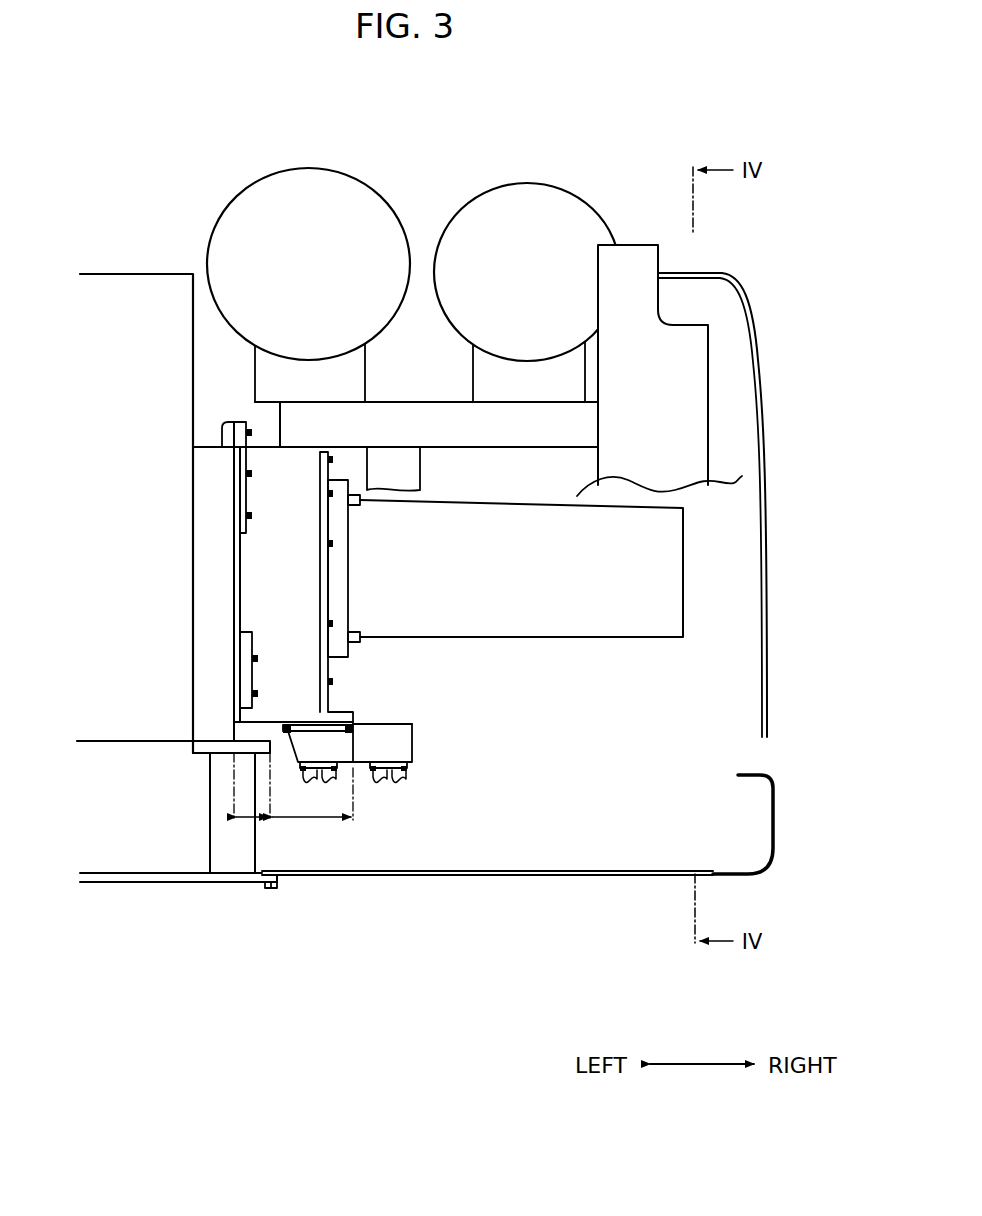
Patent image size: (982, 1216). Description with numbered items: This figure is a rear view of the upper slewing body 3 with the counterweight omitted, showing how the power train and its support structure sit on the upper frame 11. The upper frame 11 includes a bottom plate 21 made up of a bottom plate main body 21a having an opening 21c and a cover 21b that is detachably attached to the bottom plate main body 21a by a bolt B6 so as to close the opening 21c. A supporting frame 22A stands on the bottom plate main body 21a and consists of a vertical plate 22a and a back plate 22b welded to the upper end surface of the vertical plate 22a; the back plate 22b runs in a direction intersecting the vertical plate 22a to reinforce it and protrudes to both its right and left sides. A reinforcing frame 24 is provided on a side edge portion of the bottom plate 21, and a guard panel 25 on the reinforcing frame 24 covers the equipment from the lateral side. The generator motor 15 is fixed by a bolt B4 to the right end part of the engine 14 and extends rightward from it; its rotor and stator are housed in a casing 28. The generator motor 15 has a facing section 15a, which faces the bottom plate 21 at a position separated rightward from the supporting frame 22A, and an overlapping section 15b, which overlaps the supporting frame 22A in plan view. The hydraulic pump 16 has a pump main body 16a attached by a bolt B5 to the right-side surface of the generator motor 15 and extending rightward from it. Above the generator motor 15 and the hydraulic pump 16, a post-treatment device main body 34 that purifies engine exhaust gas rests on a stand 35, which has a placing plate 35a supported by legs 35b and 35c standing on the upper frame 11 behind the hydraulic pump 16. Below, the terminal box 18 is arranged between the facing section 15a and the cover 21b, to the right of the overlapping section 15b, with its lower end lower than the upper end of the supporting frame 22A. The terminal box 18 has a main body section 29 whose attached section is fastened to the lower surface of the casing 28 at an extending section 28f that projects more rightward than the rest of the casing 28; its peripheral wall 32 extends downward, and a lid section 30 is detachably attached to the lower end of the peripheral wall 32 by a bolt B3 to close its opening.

The upper slewing body 3 is at (648, 116).
The engine 14 is at (108, 274).
The post-treatment device main body 34 is at (425, 197).
The stand 35 is at (703, 370).
The placing plate 35a is at (409, 413).
The leg 35b is at (672, 438).
The leg 35c is at (412, 479).
The bolt B4 is at (253, 433).
The bolt B5 is at (360, 503).
The generator motor 15 is at (260, 585).
The casing 28 is at (221, 581).
The hydraulic pump 16 is at (577, 627).
The pump main body 16a is at (521, 594).
The terminal box 18 is at (396, 708).
The extending section 28f is at (337, 719).
The main body section 29 is at (403, 743).
The peripheral wall 32 is at (400, 733).
The guard panel 25 is at (771, 676).
The reinforcing frame 24 is at (777, 814).
The back plate 22b is at (193, 750).
The vertical plate 22a is at (208, 775).
The supporting frame 22A is at (161, 807).
The overlapping section 15b is at (253, 820).
The facing section 15a is at (311, 819).
The bolt B3 is at (353, 787).
The lid section 30 is at (357, 772).
The bolt B6 is at (264, 888).
The bottom plate main body 21a is at (150, 883).
The cover 21b is at (274, 913).
The bottom plate 21 is at (396, 933).
The opening 21c is at (388, 904).
The upper frame 11 is at (97, 928).